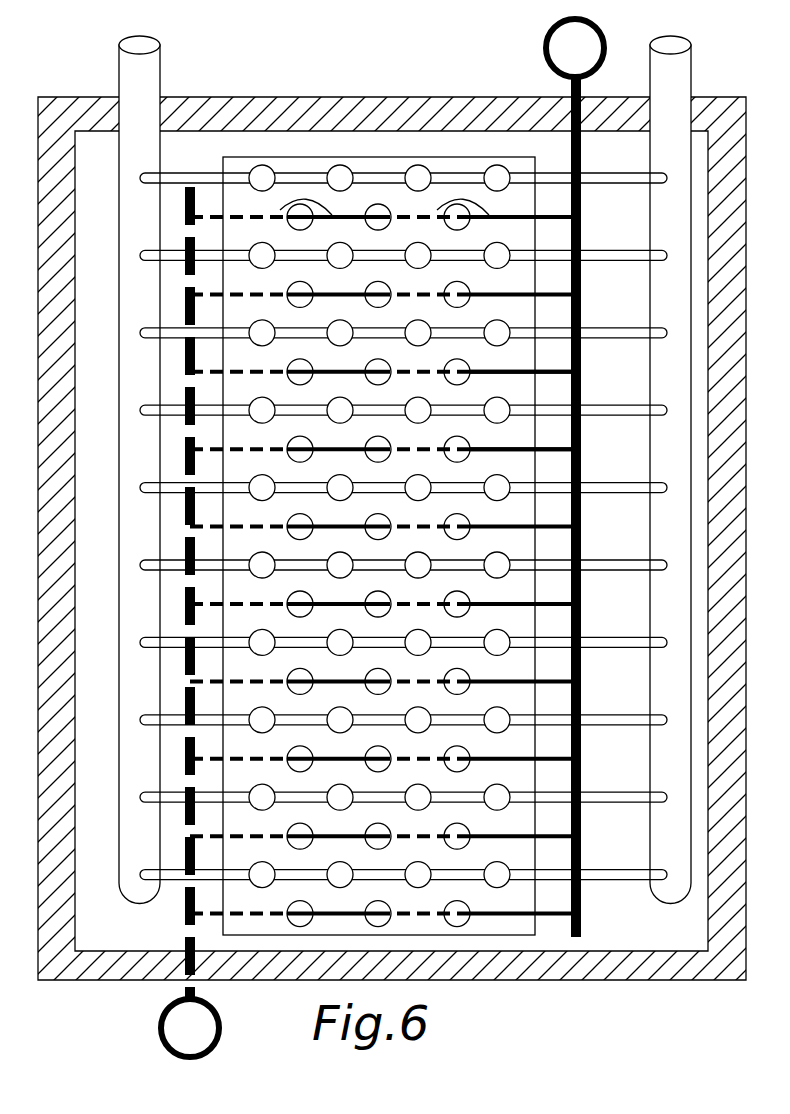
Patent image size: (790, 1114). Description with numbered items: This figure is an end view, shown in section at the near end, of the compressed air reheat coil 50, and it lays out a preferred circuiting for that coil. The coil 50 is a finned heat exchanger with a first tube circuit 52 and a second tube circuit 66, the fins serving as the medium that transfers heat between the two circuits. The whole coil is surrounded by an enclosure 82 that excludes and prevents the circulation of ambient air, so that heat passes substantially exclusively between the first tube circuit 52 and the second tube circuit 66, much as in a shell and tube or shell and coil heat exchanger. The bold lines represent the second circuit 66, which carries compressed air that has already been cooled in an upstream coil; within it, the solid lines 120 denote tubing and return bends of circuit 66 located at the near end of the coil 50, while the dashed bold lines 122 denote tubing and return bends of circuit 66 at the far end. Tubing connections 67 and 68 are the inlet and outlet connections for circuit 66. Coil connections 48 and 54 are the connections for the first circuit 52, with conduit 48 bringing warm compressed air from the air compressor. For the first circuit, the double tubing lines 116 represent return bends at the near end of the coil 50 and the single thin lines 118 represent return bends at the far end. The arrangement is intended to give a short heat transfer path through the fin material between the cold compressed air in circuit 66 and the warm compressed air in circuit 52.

The coil connection 48 is at (128, 46).
The compressed air reheat coil 50 is at (317, 155).
The first tube circuit 52 is at (625, 187).
The coil connection 54 is at (672, 45).
The second tube circuit 66 is at (538, 373).
The tubing connection 67 is at (543, 43).
The tubing connection 68 is at (158, 1033).
The enclosure 82 is at (497, 980).
The double tubing lines 116 is at (380, 175).
The single thin lines 118 is at (302, 180).
The solid lines 120 is at (282, 204).
The dashed bold lines 122 is at (484, 207).